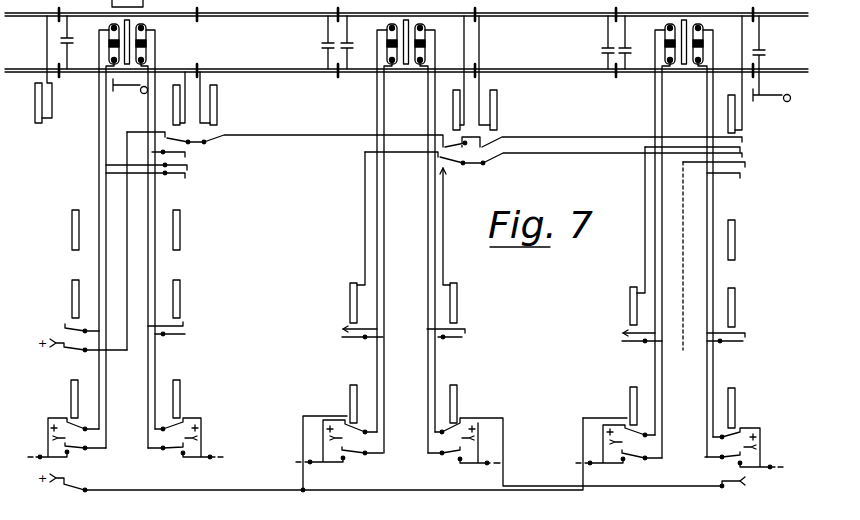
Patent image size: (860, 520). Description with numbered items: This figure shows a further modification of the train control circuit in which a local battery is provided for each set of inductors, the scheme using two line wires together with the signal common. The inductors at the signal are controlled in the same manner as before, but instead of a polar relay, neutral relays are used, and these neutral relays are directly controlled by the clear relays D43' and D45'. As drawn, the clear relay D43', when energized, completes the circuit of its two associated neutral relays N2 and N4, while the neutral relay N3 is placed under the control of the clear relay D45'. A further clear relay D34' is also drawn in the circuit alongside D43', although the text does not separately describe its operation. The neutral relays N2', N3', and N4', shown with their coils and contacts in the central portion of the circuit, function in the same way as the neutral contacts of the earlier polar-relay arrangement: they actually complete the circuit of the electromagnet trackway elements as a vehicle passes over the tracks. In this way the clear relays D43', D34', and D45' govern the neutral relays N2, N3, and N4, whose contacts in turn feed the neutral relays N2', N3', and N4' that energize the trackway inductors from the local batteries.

The neutral relay N2' is at (339, 303).
The neutral relay N3' is at (467, 303).
The neutral relay N4' is at (616, 306).
The clear relay D43' is at (67, 419).
The relay D34' is at (185, 419).
The clear relay D45' is at (744, 438).
The neutral relay N2 is at (339, 438).
The neutral relay N3 is at (584, 435).
The neutral relay N4 is at (619, 426).